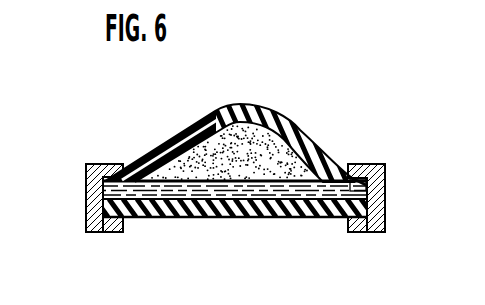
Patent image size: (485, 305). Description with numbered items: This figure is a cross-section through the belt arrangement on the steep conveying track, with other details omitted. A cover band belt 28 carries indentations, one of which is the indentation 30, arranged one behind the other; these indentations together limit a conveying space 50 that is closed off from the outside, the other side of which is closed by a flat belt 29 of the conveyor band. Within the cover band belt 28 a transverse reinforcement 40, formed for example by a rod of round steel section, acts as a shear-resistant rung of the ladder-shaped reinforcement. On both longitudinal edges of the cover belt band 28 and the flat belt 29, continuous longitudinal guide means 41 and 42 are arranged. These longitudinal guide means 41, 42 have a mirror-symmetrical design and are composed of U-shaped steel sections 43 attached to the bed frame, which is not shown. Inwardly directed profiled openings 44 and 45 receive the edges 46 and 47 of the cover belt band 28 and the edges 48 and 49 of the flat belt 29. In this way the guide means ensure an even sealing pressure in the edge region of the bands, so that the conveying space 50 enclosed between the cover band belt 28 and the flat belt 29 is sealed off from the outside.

The cover band belt 28 is at (313, 141).
The flat belt 29 is at (247, 219).
The indentation 30 is at (219, 110).
The transverse reinforcement 40 is at (386, 193).
The longitudinal guide means 41 is at (86, 190).
The longitudinal guide means 42 is at (376, 229).
The U-shaped steel section 43 is at (86, 224).
The profiled opening 44 is at (346, 218).
The profiled opening 45 is at (126, 226).
The edge of cover belt band 46 is at (356, 184).
The edge of cover belt band 47 is at (128, 179).
The edge of flat belt 48 is at (368, 227).
The edge of flat belt 49 is at (118, 222).
The conveying space 50 is at (260, 138).